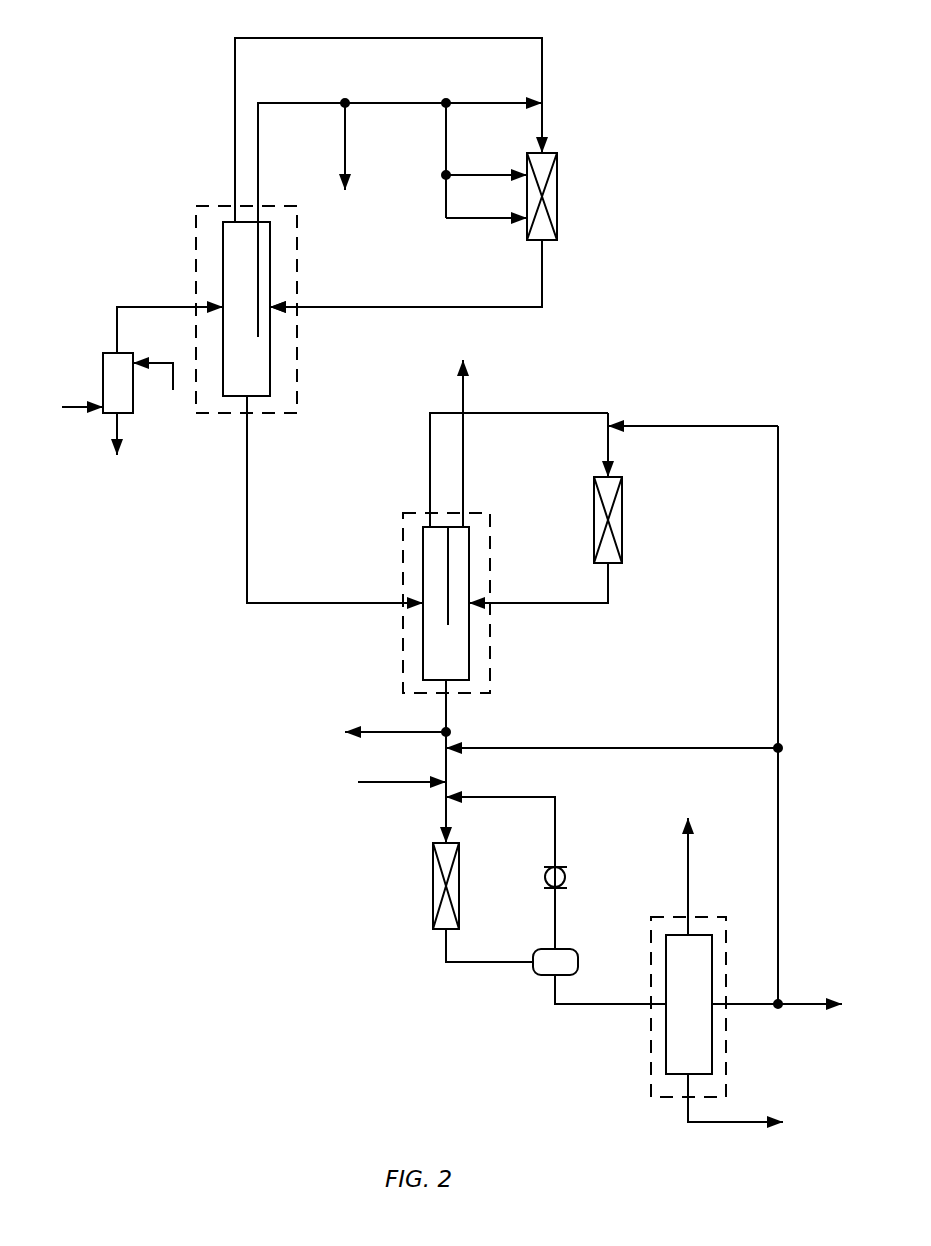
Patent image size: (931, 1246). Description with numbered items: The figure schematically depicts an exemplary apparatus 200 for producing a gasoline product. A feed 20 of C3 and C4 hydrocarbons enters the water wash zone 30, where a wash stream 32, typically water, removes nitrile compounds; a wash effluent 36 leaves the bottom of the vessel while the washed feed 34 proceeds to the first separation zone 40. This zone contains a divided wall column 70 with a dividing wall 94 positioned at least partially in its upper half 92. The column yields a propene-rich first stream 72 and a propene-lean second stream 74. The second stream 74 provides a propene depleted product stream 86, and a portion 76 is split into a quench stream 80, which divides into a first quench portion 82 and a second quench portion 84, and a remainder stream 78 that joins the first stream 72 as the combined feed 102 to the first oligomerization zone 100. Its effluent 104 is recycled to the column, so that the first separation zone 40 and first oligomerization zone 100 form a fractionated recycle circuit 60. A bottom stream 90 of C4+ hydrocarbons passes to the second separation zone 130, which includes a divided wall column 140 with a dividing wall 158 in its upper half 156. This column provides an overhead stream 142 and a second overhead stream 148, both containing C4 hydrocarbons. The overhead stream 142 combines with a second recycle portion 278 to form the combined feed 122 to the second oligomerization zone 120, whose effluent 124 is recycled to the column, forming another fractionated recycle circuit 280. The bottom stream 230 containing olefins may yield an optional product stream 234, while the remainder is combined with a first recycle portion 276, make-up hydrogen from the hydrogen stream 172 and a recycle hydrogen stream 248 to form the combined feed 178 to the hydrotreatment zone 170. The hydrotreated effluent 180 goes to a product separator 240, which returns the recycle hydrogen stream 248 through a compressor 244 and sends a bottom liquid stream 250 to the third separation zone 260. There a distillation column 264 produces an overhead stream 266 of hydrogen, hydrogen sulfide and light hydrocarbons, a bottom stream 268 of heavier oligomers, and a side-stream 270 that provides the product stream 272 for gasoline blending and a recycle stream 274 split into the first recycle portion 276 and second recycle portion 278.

The apparatus 200 is at (707, 37).
The fractionated recycle circuit 60 is at (575, 55).
The first stream 72 is at (235, 92).
The second stream 74 is at (258, 170).
The portion 76 is at (395, 103).
The remainder stream 78 is at (488, 103).
The propene depleted product stream 86 is at (345, 131).
The quench stream 80 is at (446, 131).
The first quench portion 82 is at (488, 175).
The second quench portion 84 is at (488, 218).
The combined feed 102 is at (544, 124).
The first oligomerization zone 100 is at (557, 195).
The effluent 104 is at (544, 295).
The upper half 92 is at (305, 318).
The first separation zone 40 is at (200, 206).
The divided wall column 70 is at (246, 309).
The dividing wall 94 is at (248, 271).
The washed feed 34 is at (148, 307).
The water wash zone 30 is at (110, 353).
The wash stream 32 is at (164, 363).
The feed 20 is at (73, 407).
The wash effluent 36 is at (120, 427).
The bottom stream 90 is at (247, 552).
The overhead stream 142 is at (445, 413).
The second overhead stream 148 is at (463, 460).
The divided wall column 140 is at (448, 603).
The dividing wall 158 is at (448, 569).
The second separation zone 130 is at (490, 645).
The upper half 156 is at (403, 567).
The fractionated recycle circuit 280 is at (625, 388).
The second recycle portion 278 is at (722, 426).
The combined feed 122 is at (610, 445).
The second oligomerization zone 120 is at (622, 520).
The effluent 124 is at (610, 590).
The bottom stream 230 is at (450, 713).
The product stream 234 is at (370, 732).
The first recycle portion 276 is at (685, 748).
The hydrogen stream 172 is at (403, 782).
The combined feed 178 is at (450, 820).
The recycle hydrogen stream 248 is at (543, 797).
The compressor 244 is at (561, 866).
The hydrotreatment zone 170 is at (433, 885).
The hydrotreated effluent 180 is at (446, 951).
The product separator 240 is at (575, 950).
The bottom liquid stream 250 is at (590, 1004).
The distillation column 264 is at (689, 1004).
The third separation zone 260 is at (727, 1078).
The overhead stream 266 is at (690, 860).
The bottom stream 268 is at (688, 1122).
The side-stream 270 is at (752, 1004).
The product stream 272 is at (805, 1004).
The recycle stream 274 is at (779, 815).